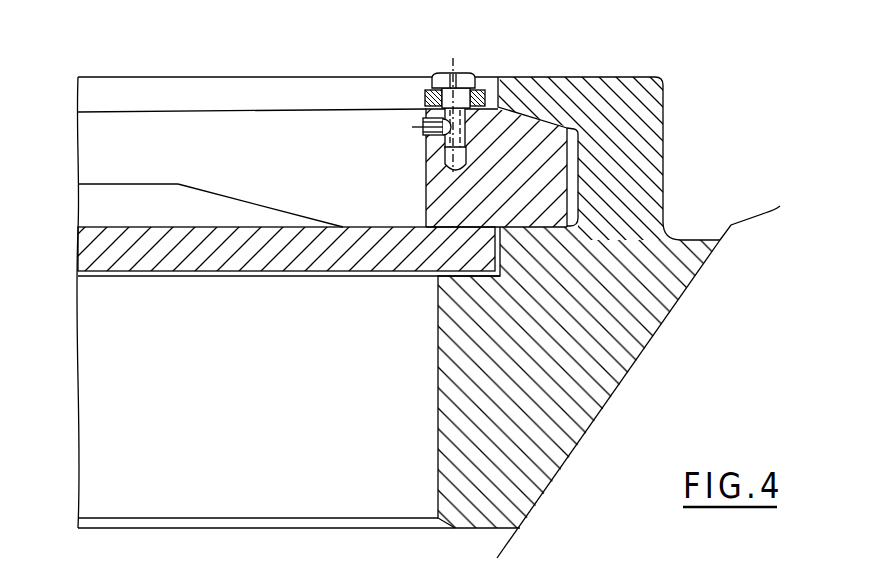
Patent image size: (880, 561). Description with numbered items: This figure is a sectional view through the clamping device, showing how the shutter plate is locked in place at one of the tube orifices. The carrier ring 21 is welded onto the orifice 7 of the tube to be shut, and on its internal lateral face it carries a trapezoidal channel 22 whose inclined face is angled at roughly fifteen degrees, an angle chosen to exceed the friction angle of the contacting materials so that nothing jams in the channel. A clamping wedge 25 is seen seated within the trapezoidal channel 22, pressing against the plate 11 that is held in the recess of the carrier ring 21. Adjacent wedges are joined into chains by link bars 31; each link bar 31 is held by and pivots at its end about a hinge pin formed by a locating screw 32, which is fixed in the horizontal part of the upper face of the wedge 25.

The orifice 7 is at (105, 400).
The plate 11 is at (233, 258).
The carrier ring 21 is at (645, 113).
The trapezoidal channel 22 is at (572, 187).
The clamping wedge 25 is at (437, 185).
The link bar 31 is at (490, 76).
The locating screw 32 is at (443, 75).